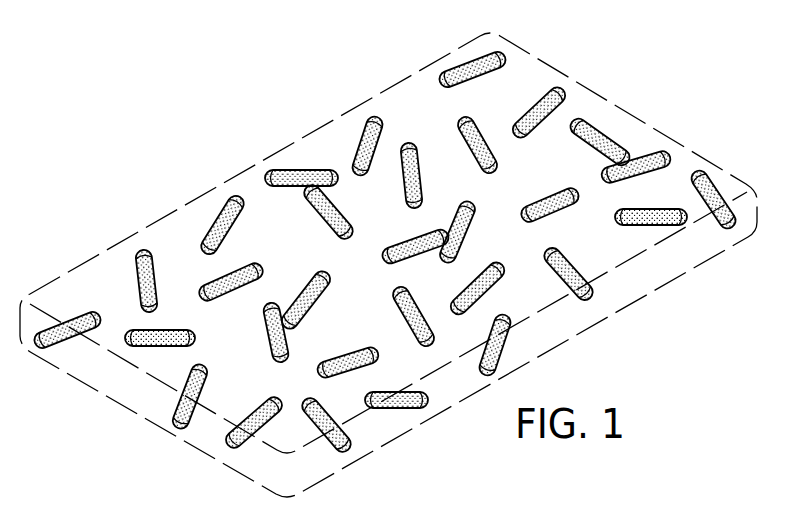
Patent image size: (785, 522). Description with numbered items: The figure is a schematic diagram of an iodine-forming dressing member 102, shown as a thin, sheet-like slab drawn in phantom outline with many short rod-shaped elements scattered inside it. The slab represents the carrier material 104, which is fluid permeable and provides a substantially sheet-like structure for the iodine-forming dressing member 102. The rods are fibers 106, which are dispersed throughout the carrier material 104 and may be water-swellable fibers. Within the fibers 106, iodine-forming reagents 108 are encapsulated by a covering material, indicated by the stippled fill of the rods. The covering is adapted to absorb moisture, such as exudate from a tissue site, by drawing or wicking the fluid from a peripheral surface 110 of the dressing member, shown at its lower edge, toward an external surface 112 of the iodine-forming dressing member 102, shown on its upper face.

The iodine-forming dressing member 102 is at (210, 105).
The carrier material 104 is at (660, 276).
The fibers 106 is at (130, 267).
The iodine-forming reagents 108 is at (706, 182).
The peripheral surface 110 is at (400, 437).
The external surface 112 is at (542, 75).